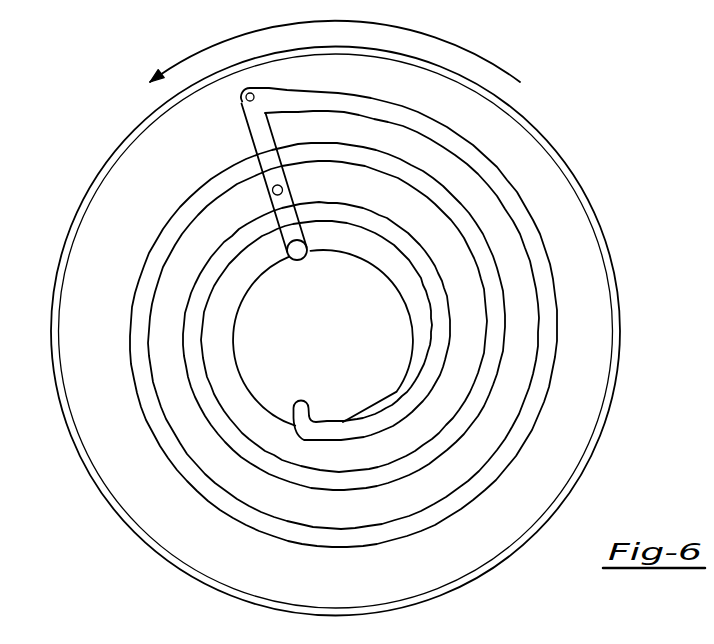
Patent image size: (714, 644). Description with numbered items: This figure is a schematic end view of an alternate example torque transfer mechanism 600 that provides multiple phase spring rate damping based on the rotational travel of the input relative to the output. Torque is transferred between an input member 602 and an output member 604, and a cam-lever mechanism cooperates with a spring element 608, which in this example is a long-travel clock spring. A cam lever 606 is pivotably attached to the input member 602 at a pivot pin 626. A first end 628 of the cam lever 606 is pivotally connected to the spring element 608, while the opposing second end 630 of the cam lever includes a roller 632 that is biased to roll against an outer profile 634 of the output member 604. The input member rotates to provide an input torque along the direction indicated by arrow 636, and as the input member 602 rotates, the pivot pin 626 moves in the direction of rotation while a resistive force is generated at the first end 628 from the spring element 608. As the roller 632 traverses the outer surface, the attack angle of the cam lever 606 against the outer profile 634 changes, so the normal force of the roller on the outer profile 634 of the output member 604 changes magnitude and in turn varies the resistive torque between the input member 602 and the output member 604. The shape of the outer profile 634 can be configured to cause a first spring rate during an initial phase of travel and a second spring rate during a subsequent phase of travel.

The torque transfer mechanism 600 is at (122, 94).
The input member 602 is at (92, 182).
The output member 604 is at (343, 343).
The cam lever 606 is at (258, 136).
The spring element 608 is at (547, 318).
The pivot pin 626 is at (282, 190).
The first end 628 is at (242, 101).
The second end 630 is at (320, 241).
The roller 632 is at (287, 250).
The outer profile 634 is at (416, 300).
The arrow 636 is at (480, 55).